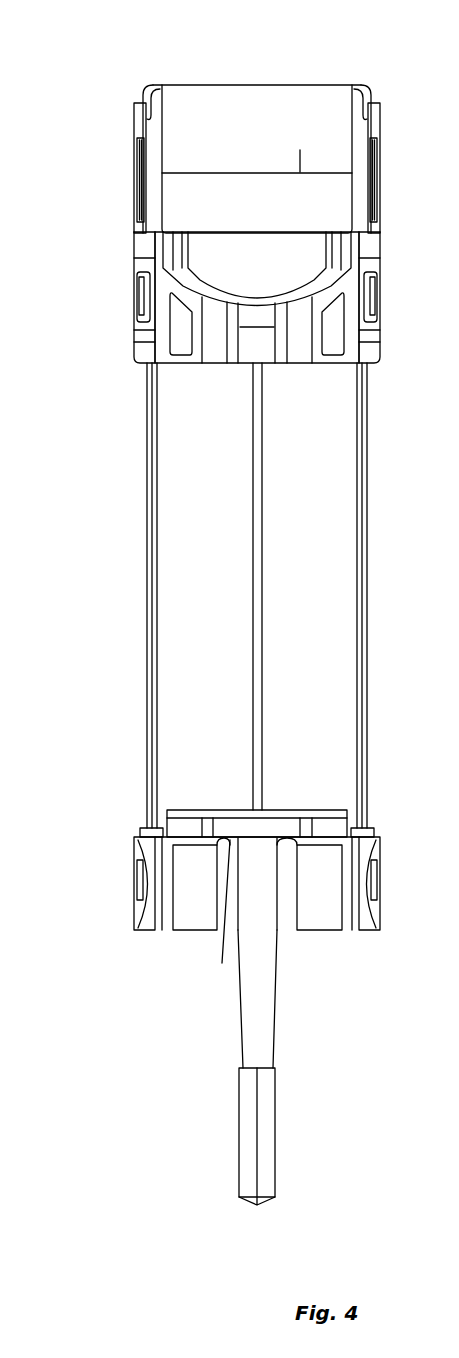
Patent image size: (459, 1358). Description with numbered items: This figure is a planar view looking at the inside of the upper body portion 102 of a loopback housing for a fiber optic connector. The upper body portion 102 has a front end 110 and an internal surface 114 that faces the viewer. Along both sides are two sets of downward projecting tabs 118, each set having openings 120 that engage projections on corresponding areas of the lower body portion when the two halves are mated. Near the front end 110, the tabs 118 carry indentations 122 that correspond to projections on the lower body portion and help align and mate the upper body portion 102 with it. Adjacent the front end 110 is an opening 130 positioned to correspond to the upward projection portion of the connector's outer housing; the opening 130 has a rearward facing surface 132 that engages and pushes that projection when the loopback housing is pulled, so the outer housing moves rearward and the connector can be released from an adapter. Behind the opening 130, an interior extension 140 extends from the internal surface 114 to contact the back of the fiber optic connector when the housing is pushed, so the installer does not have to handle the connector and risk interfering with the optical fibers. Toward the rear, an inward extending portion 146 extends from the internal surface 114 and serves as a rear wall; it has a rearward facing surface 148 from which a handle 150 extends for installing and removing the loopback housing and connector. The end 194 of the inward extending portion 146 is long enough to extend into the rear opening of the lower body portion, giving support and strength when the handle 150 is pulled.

The upper body portion 102 is at (112, 657).
The front end 110 is at (183, 85).
The internal surface 114 is at (168, 538).
The downward projecting tabs 118 is at (138, 322).
The openings 120 is at (140, 293).
The indentations 122 is at (148, 86).
The opening 130 is at (253, 182).
The rearward facing surface 132 is at (302, 170).
The interior extension 140 is at (183, 285).
The inward extending portion 146 is at (187, 810).
The rearward facing surface 148 is at (222, 963).
The handle 150 is at (275, 1007).
The end 194 is at (268, 835).